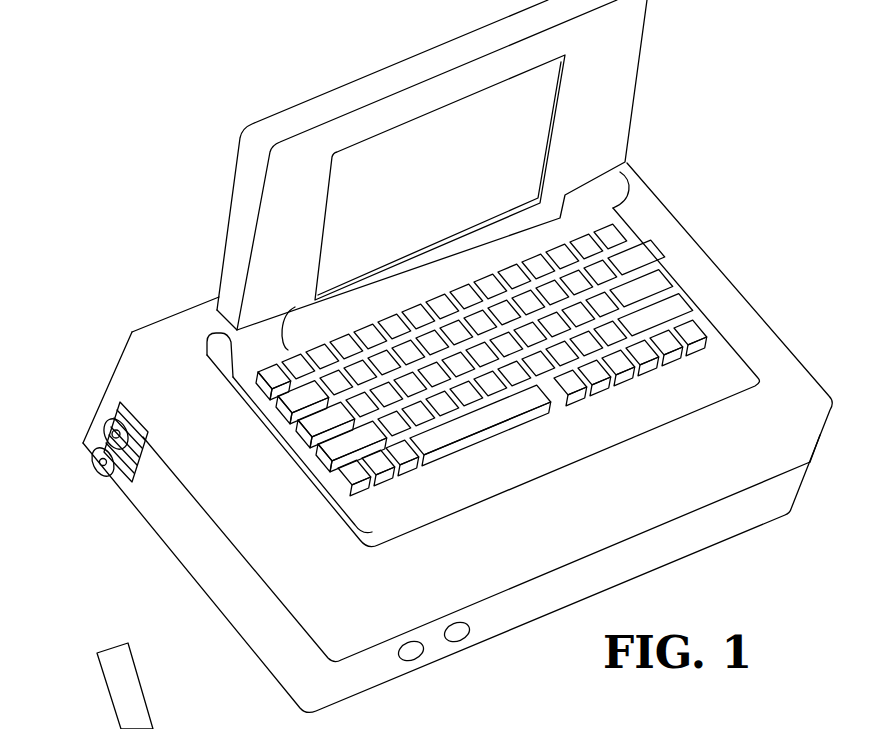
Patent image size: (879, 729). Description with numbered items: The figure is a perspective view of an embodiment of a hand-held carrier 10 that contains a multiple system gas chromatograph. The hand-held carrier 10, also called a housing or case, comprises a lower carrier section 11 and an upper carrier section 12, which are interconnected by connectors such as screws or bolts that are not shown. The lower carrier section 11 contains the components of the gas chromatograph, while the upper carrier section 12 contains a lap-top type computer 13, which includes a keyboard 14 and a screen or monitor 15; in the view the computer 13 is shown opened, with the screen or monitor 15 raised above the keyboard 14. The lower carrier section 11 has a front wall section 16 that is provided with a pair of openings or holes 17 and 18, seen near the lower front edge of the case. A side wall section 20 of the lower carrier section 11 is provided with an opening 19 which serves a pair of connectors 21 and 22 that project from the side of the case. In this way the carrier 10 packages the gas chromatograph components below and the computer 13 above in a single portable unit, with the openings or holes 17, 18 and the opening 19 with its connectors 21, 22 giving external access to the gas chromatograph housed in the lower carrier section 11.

The hand-held carrier 10 is at (720, 199).
The lower carrier section 11 is at (70, 393).
The upper carrier section 12 is at (181, 277).
The lap-top type computer 13 is at (513, 504).
The keyboard 14 is at (556, 460).
The screen or monitor 15 is at (452, 184).
The front wall section 16 is at (664, 564).
The opening or hole 17 is at (422, 660).
The opening or hole 18 is at (465, 642).
The opening 19 is at (143, 470).
The side wall section 20 is at (243, 595).
The connector 21 is at (95, 466).
The connector 22 is at (127, 425).